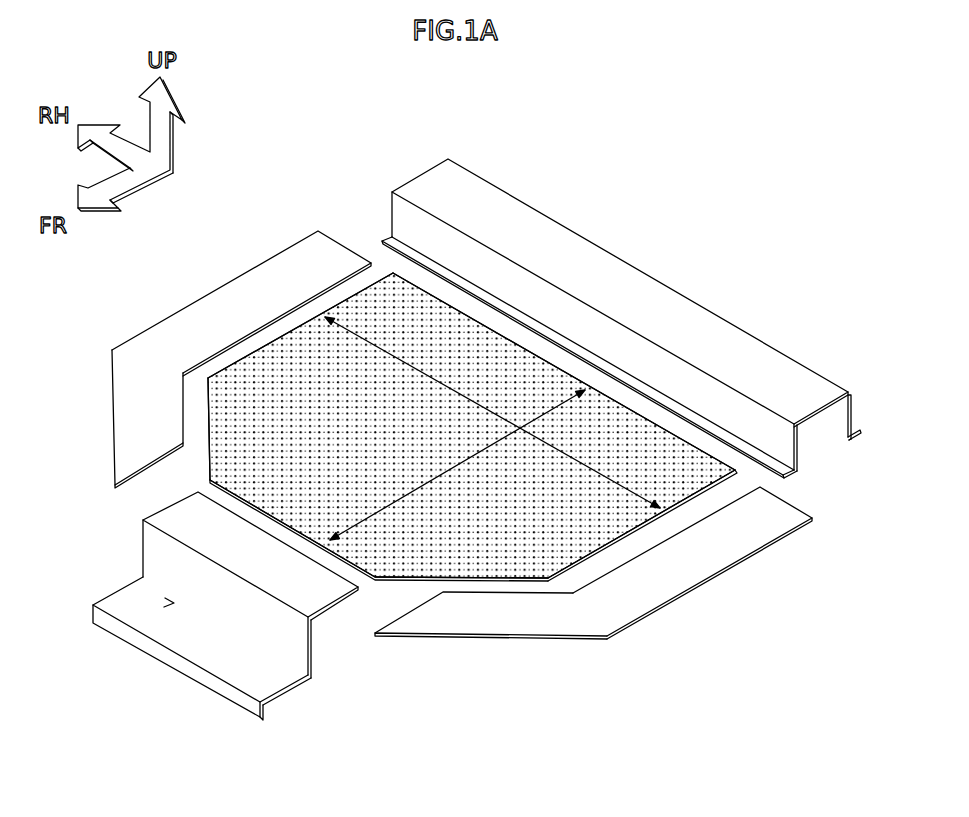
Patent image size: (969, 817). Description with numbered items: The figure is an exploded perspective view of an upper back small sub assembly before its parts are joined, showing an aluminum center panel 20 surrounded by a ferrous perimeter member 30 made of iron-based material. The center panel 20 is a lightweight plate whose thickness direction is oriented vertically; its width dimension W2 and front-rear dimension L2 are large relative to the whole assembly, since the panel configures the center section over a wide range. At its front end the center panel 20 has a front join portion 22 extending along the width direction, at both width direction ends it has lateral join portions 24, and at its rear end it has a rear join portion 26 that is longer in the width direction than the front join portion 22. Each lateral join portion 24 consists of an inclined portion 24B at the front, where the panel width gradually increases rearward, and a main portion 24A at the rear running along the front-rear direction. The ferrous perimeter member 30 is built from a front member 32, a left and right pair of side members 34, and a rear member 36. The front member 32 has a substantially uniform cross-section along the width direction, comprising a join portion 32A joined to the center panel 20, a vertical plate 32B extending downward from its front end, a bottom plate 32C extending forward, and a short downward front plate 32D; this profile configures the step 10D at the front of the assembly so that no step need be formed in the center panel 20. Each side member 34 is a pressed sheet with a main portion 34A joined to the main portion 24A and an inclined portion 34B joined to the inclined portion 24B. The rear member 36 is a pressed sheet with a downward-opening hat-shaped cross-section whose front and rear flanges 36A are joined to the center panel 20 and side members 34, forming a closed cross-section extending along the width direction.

The step 10D is at (173, 603).
The center panel 20 is at (470, 352).
The front join portion 22 is at (297, 515).
The lateral join portion 24 is at (240, 385).
The main portion 24A is at (330, 308).
The inclined portion 24B is at (222, 413).
The rear join portion 26 is at (536, 372).
The ferrous perimeter member 30 is at (447, 469).
The front member 32 is at (195, 687).
The join portion 32A is at (322, 593).
The vertical plate 32B is at (298, 640).
The bottom plate 32C is at (267, 680).
The front plate 32D is at (247, 707).
The side member 34 is at (140, 330).
The main portion 34A is at (278, 267).
The inclined portion 34B is at (130, 425).
The rear member 36 is at (652, 268).
The flange 36A is at (858, 427).
The width dimension W2 is at (410, 360).
The front-rear dimension L2 is at (444, 470).